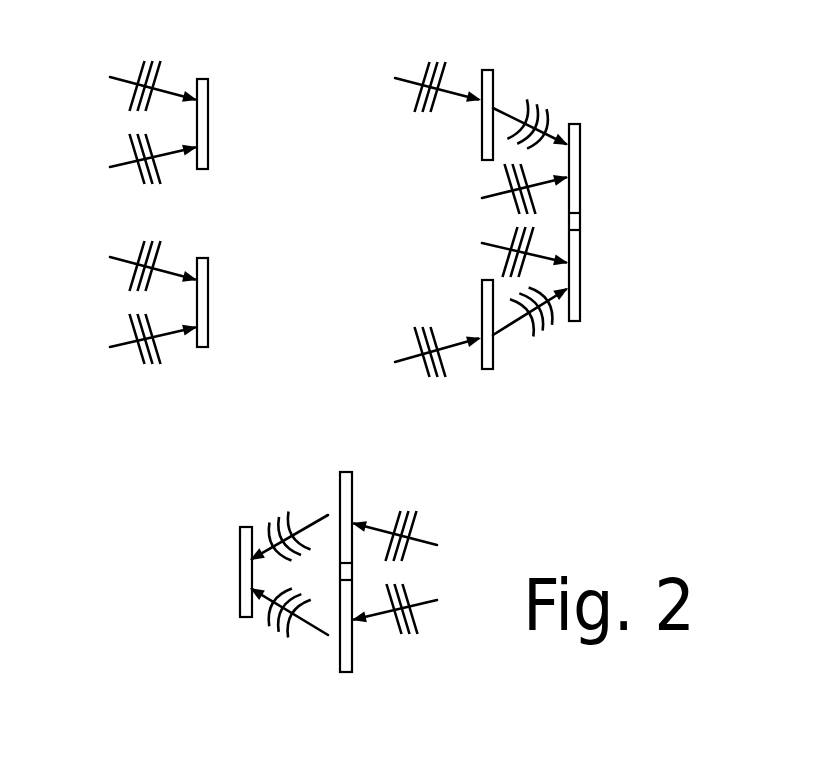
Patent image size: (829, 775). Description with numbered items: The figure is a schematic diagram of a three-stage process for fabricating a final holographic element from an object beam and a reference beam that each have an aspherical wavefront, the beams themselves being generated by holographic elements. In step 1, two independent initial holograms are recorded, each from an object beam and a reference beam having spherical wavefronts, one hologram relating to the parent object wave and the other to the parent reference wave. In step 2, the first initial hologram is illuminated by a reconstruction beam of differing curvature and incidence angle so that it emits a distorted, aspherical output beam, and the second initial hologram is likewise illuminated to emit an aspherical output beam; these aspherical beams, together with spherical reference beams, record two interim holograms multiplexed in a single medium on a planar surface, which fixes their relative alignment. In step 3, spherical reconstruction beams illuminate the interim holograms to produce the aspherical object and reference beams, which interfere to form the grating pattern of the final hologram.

The step 1 is at (174, 219).
The step 2 is at (497, 224).
The step 3 is at (382, 587).